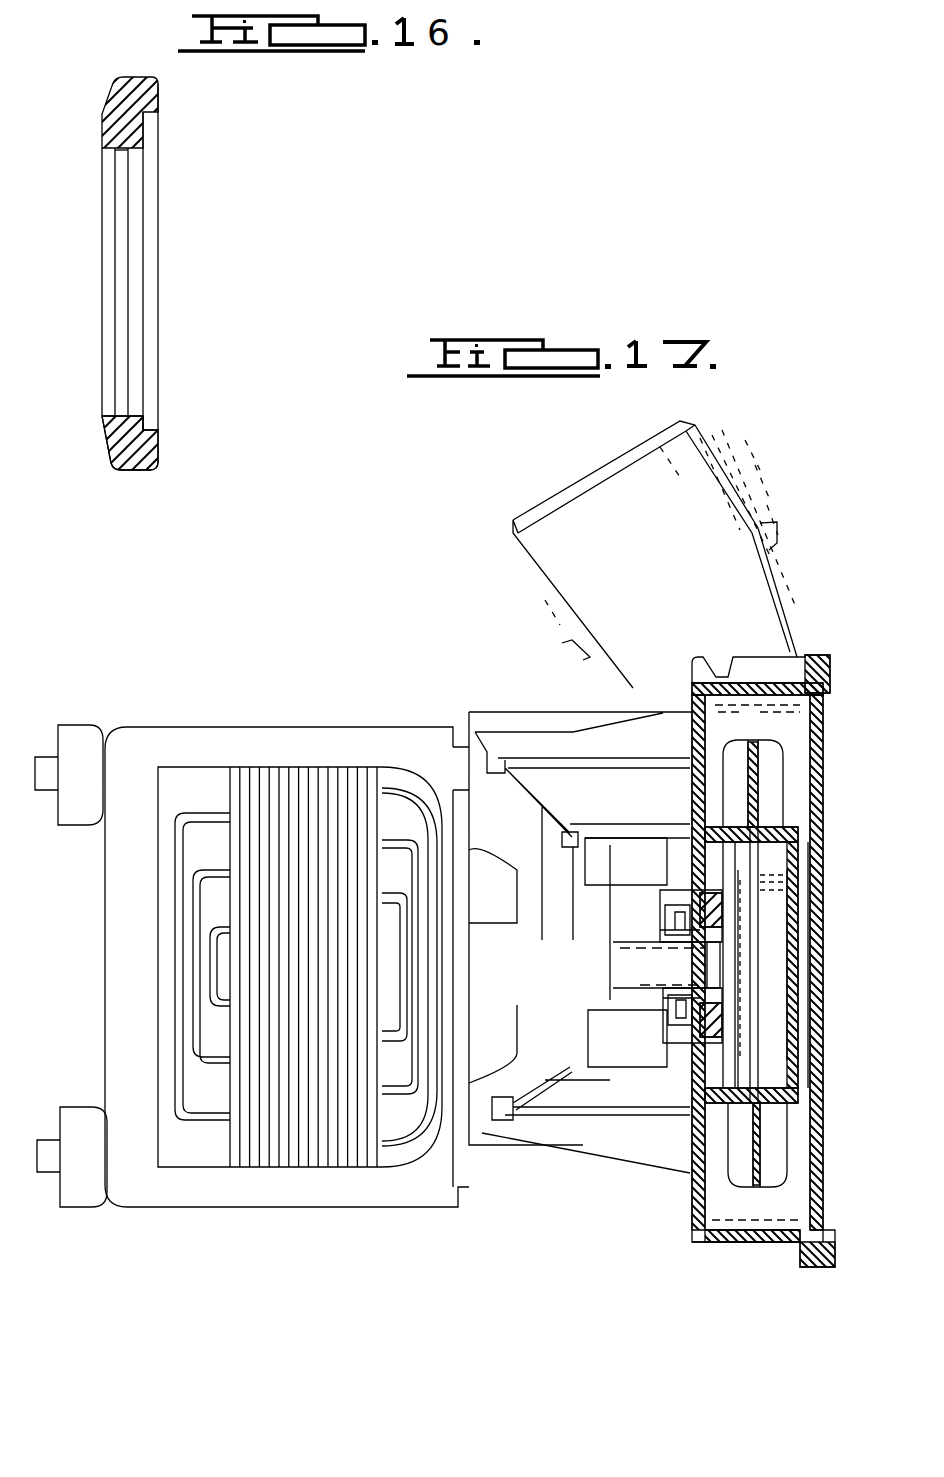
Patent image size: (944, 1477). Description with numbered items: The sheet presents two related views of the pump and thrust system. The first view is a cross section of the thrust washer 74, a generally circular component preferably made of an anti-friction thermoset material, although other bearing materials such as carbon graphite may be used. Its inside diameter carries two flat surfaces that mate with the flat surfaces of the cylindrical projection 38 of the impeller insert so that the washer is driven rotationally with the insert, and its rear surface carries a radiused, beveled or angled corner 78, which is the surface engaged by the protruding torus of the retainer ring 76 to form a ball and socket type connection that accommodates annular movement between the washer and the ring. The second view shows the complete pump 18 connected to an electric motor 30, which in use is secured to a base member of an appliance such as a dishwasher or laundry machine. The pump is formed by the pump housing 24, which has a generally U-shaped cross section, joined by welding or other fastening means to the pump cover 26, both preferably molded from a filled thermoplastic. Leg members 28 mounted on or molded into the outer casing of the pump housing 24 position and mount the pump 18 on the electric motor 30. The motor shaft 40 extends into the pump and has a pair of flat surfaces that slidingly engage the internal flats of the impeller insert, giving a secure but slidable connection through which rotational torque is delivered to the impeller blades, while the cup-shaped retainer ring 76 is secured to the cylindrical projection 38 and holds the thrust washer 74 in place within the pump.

In FIG. 16, the thrust washer 74 is at (118, 448).
In FIG. 16, the radiused, beveled or angled corner 78 is at (108, 92).
In FIG. 17, the pump 18 is at (680, 1250).
In FIG. 17, the pump housing 24 is at (739, 670).
In FIG. 17, the pump cover 26 is at (825, 796).
In FIG. 17, the leg members 28 is at (528, 748).
In FIG. 17, the electric motor 30 is at (304, 1160).
In FIG. 17, the cylindrical projection 38 is at (667, 1002).
In FIG. 17, the motor shaft 40 is at (625, 962).
In FIG. 17, the retainer ring 76 is at (665, 905).